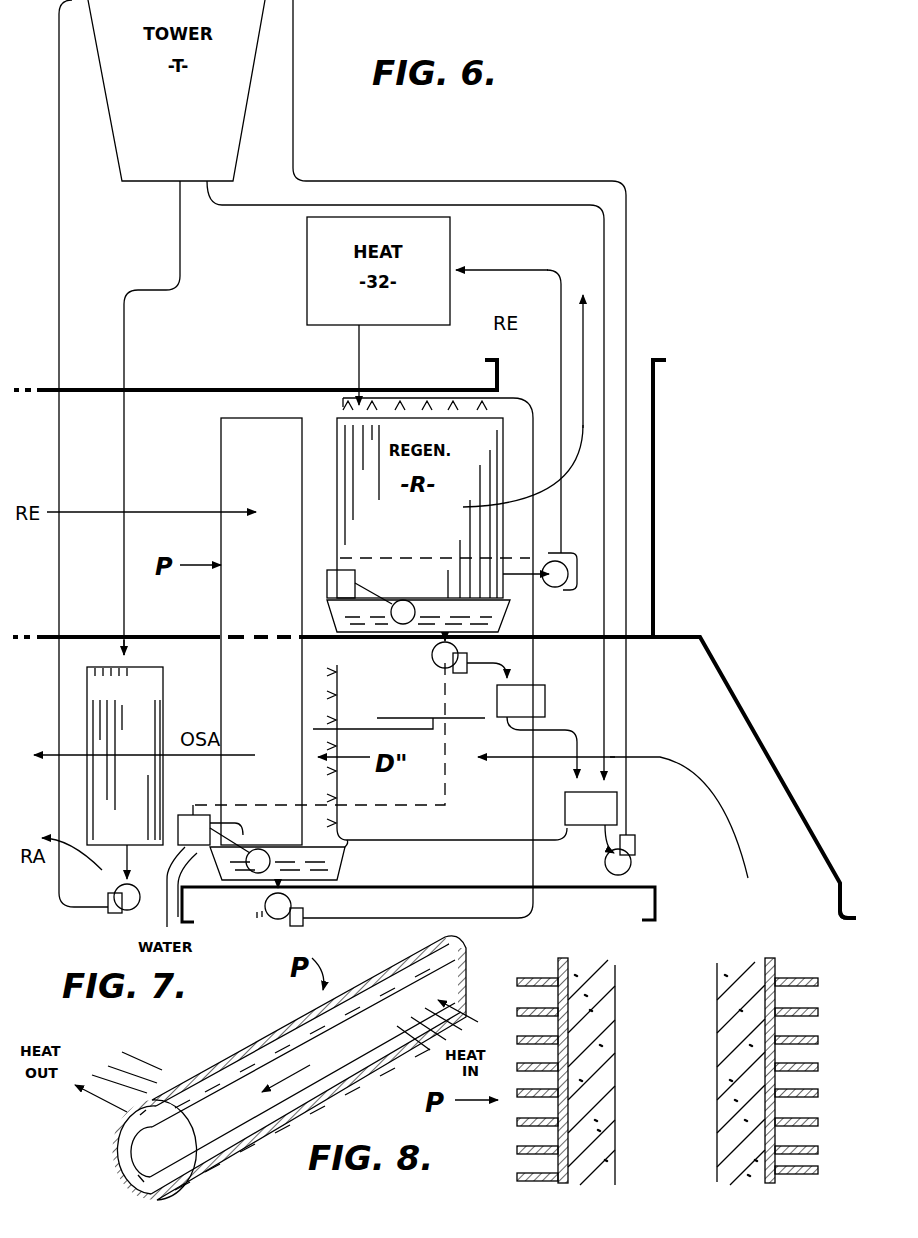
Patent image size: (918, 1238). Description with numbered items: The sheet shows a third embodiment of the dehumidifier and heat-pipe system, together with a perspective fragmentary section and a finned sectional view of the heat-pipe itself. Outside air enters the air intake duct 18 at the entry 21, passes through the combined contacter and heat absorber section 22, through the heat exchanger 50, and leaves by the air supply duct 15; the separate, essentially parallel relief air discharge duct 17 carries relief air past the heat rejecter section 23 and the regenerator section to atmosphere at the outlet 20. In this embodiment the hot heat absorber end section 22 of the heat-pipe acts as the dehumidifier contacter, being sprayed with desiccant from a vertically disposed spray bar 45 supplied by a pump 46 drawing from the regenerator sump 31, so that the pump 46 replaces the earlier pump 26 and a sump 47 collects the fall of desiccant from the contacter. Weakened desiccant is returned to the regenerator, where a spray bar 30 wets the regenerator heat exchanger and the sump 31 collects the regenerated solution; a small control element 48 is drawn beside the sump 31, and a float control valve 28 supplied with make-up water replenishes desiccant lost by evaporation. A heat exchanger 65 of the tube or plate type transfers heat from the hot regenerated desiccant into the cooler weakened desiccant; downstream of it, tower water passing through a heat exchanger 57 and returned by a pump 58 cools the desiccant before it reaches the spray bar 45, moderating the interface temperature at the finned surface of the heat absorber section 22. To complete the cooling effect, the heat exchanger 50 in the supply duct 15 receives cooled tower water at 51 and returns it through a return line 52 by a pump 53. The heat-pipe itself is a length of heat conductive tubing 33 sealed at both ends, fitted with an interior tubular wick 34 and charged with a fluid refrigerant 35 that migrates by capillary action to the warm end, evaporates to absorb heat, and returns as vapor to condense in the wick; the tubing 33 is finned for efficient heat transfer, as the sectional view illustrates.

In FIG. 6, the air supply duct 15 is at (308, 732).
In FIG. 6, the relief air discharge duct 17 is at (151, 510).
In FIG. 6, the air intake duct 18 is at (679, 816).
In FIG. 6, the relief air exhaust outlet 20 is at (643, 367).
In FIG. 6, the outside air entry 21 is at (799, 912).
In FIG. 6, the heat absorber section 22 is at (277, 833).
In FIG. 6, the heat rejecter section 23 is at (257, 418).
In FIG. 6, the pump 26 is at (266, 921).
In FIG. 6, the float control valve 28 is at (190, 846).
In FIG. 6, the spray bar 30 is at (425, 398).
In FIG. 6, the sump 31 is at (508, 610).
In FIG. 6, the heat conductive tubing 33 is at (562, 587).
In FIG. 7, the heat conductive tubing 33 is at (256, 1041).
In FIG. 8, the heat conductive tubing 33 is at (565, 966).
In FIG. 7, the tubular wick 34 is at (118, 1145).
In FIG. 8, the tubular wick 34 is at (600, 1005).
In FIG. 7, the fluid refrigerant 35 is at (240, 1104).
In FIG. 8, the fluid refrigerant 35 is at (667, 1079).
In FIG. 6, the spray bar 45 is at (340, 700).
In FIG. 6, the pump 46 is at (430, 660).
In FIG. 6, the sump 47 is at (345, 861).
In FIG. 6, the level control 48 is at (355, 578).
In FIG. 6, the heat exchanger 50 is at (145, 725).
In FIG. 6, the cooled water supply 51 is at (133, 667).
In FIG. 6, the return line 52 is at (59, 238).
In FIG. 6, the pump 53 is at (118, 912).
In FIG. 6, the heat exchanger 57 is at (590, 828).
In FIG. 6, the pump 58 is at (633, 862).
In FIG. 6, the heat exchanger 65 is at (548, 700).